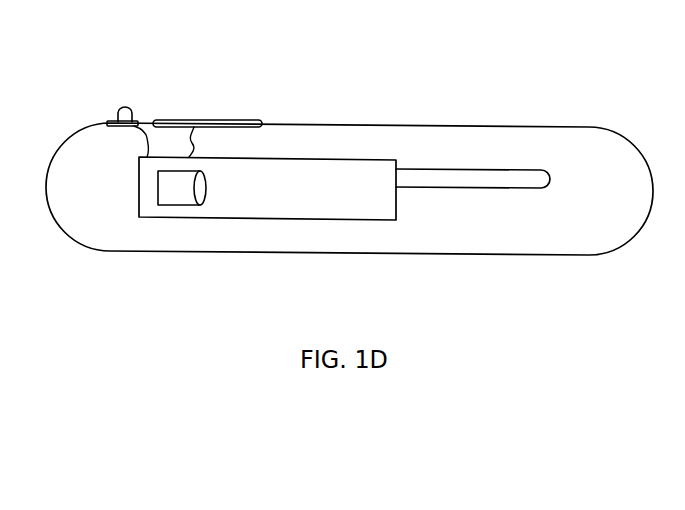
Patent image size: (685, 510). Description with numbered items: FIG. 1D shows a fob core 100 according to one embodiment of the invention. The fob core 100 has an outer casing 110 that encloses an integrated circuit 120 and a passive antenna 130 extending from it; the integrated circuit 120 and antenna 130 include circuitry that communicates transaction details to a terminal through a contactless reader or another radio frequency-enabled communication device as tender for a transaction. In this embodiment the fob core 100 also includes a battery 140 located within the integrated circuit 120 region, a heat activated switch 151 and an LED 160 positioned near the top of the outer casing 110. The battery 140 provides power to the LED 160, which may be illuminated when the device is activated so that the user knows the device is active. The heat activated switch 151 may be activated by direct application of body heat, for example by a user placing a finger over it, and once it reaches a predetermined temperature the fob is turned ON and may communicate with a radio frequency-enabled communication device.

The fob core 100 is at (349, 196).
The outer casing 110 is at (408, 125).
The integrated circuit 120 is at (282, 190).
The passive antenna 130 is at (458, 178).
The battery 140 is at (175, 188).
The heat activated switch 151 is at (218, 122).
The LED 160 is at (124, 115).